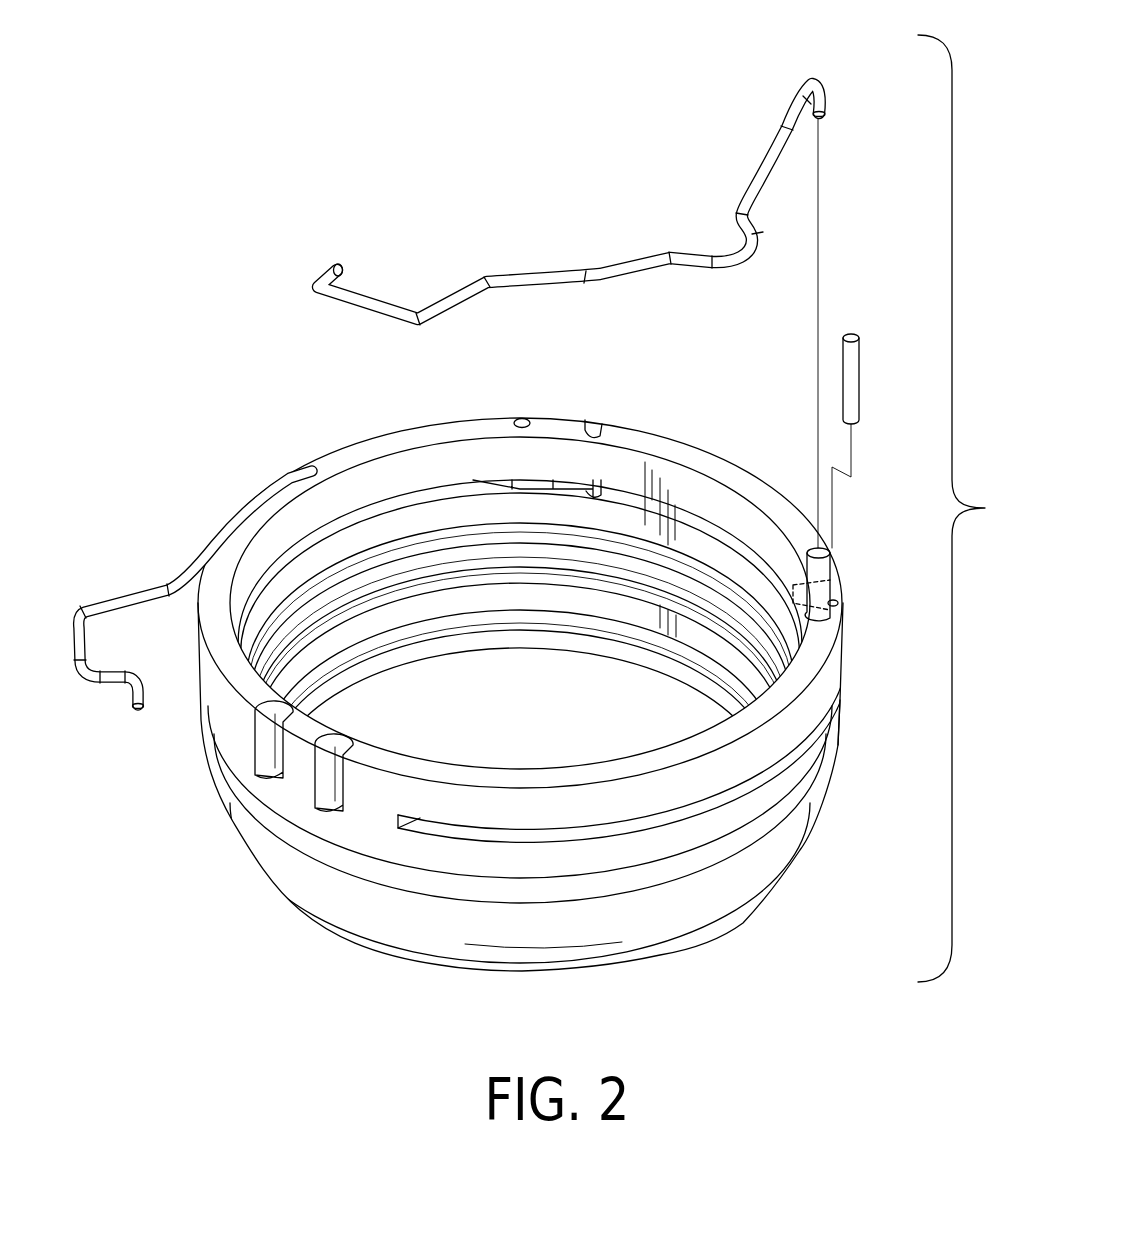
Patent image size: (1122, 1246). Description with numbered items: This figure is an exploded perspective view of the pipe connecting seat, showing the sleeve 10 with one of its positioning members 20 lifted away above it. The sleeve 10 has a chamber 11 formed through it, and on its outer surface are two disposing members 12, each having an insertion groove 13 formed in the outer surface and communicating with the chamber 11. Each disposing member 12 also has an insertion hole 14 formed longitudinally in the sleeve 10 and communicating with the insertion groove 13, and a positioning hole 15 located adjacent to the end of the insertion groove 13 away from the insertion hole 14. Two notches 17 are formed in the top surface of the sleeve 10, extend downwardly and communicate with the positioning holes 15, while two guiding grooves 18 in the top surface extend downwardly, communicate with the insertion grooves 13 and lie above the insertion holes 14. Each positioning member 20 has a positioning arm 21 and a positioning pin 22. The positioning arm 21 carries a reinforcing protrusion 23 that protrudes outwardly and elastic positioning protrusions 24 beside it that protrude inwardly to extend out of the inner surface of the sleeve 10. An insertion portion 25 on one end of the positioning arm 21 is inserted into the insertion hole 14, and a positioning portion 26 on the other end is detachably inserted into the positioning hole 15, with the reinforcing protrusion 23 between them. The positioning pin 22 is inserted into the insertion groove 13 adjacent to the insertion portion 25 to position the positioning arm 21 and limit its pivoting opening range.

The sleeve 10 is at (372, 916).
The chamber 11 is at (542, 723).
The disposing member 12 is at (822, 757).
The insertion groove 13 is at (672, 815).
The insertion hole 14 is at (836, 620).
The positioning hole 15 is at (322, 800).
The notch 17 is at (327, 763).
The guiding groove 18 is at (604, 428).
The positioning member 20 is at (651, 508).
The positioning arm 21 is at (611, 211).
The positioning pin 22 is at (853, 348).
The reinforcing protrusion 23 is at (735, 264).
The elastic positioning protrusion 24 is at (583, 281).
The insertion portion 25 is at (823, 105).
The positioning portion 26 is at (341, 282).